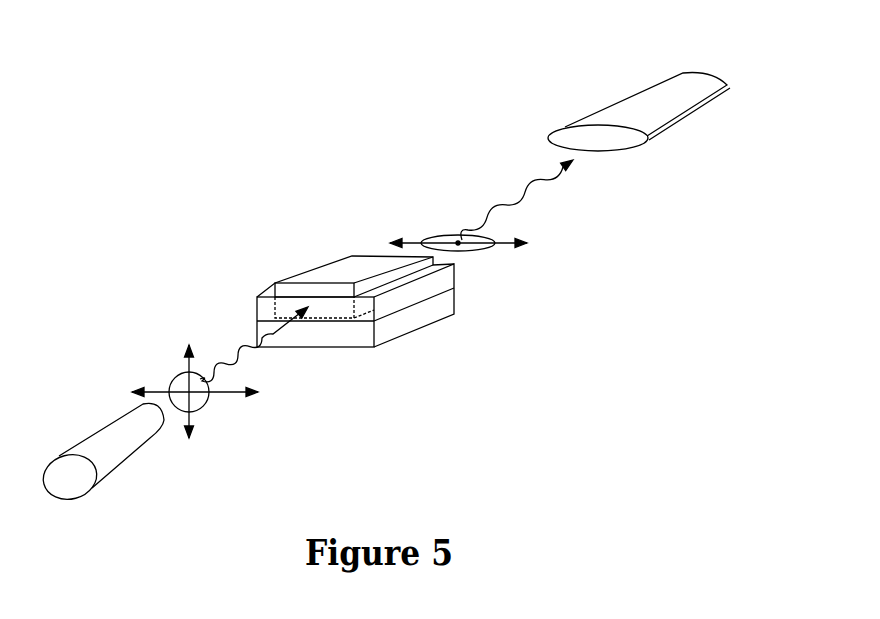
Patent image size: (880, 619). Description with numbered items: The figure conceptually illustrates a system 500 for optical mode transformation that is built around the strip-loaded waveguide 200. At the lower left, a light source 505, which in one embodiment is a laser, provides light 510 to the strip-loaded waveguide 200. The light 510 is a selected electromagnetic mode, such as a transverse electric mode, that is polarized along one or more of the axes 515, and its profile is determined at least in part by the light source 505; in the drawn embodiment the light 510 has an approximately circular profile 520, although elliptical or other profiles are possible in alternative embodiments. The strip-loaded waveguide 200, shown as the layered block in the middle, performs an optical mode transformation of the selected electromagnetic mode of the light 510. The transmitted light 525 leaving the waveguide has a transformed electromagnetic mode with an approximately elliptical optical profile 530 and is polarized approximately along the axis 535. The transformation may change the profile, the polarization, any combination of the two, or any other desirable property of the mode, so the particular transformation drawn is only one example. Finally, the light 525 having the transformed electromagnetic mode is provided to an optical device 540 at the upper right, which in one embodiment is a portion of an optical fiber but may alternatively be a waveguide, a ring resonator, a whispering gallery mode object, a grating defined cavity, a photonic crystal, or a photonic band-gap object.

The system 500 is at (290, 112).
The light source 505 is at (100, 431).
The light 510 is at (234, 341).
The axes 515 is at (235, 397).
The circular profile 520 is at (198, 412).
The strip-loaded waveguide 200 is at (345, 248).
The transmitted light 525 is at (480, 199).
The elliptical optical profile 530 is at (468, 252).
The axis 535 is at (503, 246).
The optical device 540 is at (697, 73).